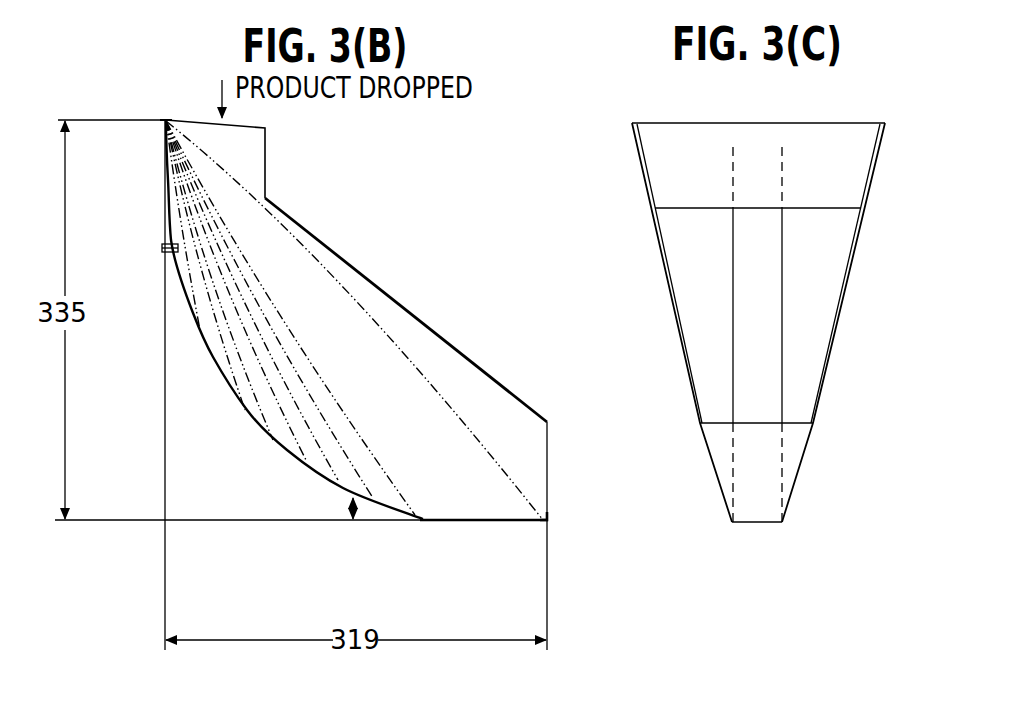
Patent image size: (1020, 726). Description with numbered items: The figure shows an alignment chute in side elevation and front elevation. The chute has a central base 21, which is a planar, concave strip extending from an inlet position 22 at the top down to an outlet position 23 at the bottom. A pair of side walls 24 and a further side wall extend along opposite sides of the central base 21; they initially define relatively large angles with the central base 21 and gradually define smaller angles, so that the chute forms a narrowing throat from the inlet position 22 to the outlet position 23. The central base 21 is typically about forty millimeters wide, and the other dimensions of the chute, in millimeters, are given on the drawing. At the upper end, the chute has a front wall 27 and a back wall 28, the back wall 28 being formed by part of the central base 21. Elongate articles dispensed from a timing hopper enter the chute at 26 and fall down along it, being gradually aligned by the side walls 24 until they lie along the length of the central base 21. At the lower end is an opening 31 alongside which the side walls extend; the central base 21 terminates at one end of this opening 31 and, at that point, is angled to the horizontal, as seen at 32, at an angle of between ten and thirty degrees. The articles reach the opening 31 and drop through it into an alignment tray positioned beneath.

The central base 21 is at (246, 413).
The inlet position 22 is at (163, 117).
The outlet position 23 is at (533, 523).
The side wall 24 is at (843, 324).
The chute entry point 26 is at (630, 190).
The front wall 27 is at (268, 163).
The back wall 28 is at (164, 166).
The opening 31 is at (468, 523).
The angled end of base 32 is at (347, 507).